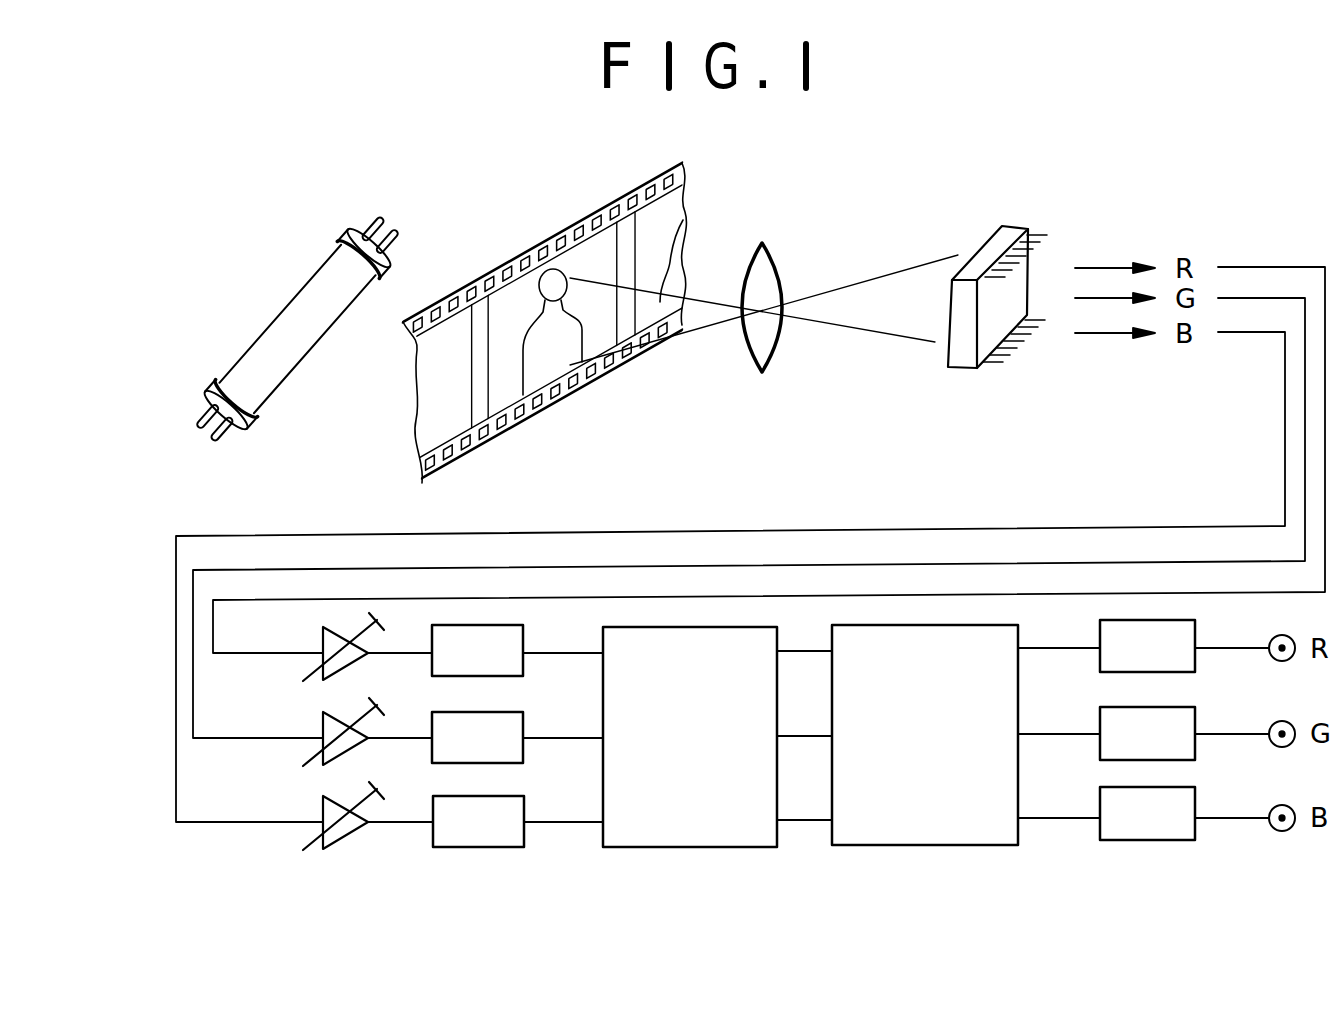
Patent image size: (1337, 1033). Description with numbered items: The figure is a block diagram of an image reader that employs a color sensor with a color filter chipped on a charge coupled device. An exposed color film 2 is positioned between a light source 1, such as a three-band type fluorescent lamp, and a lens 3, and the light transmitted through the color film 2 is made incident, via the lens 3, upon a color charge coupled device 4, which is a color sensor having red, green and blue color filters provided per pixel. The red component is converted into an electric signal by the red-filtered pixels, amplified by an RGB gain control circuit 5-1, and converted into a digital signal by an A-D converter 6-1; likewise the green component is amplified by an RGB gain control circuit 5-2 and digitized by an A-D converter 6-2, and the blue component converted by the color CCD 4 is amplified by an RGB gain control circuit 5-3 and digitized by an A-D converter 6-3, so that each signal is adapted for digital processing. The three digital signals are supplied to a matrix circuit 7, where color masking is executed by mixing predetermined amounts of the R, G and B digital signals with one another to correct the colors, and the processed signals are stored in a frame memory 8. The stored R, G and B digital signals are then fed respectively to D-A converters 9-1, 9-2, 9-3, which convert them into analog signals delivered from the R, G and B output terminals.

The light source 1 is at (300, 302).
The color film 2 is at (537, 247).
The lens 3 is at (777, 268).
The color charge coupled device 4 is at (992, 248).
The RGB gain control circuit 5-1 is at (345, 661).
The RGB gain control circuit 5-2 is at (345, 746).
The RGB gain control circuit 5-3 is at (345, 830).
The A-D converter 6-1 is at (523, 667).
The A-D converter 6-2 is at (523, 752).
The A-D converter 6-3 is at (524, 838).
The matrix circuit 7 is at (777, 828).
The frame memory 8 is at (1018, 828).
The D-A converter 9-1 is at (1195, 662).
The D-A converter 9-2 is at (1195, 750).
The D-A converter 9-3 is at (1195, 838).